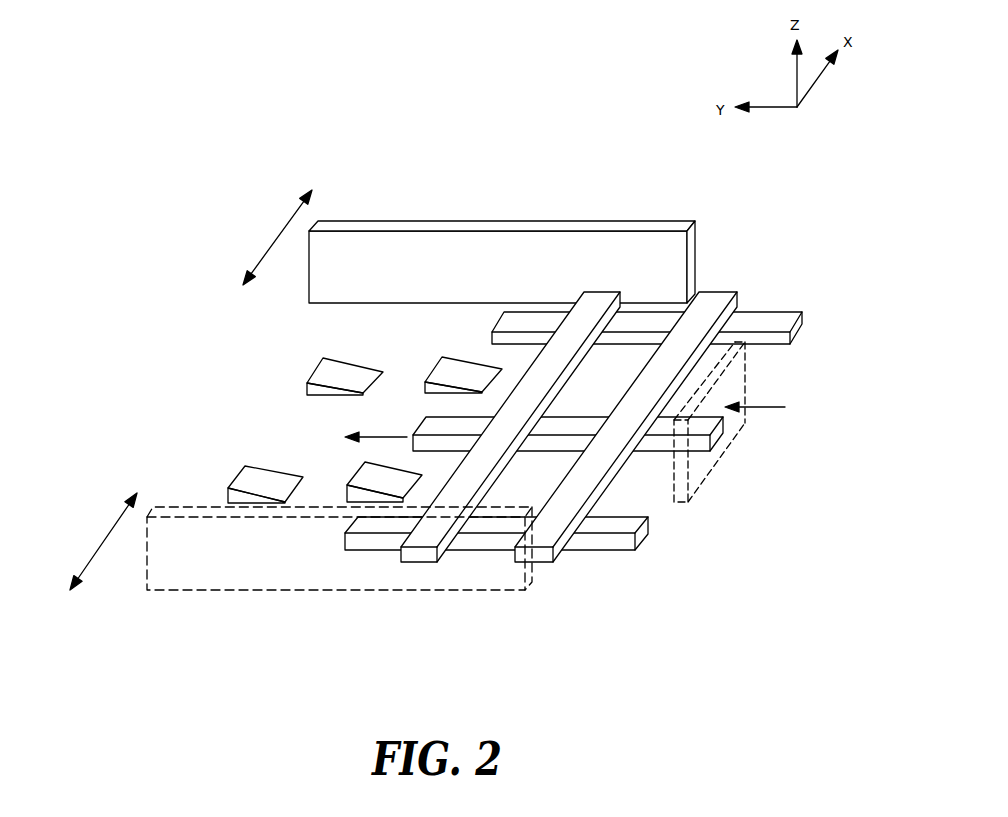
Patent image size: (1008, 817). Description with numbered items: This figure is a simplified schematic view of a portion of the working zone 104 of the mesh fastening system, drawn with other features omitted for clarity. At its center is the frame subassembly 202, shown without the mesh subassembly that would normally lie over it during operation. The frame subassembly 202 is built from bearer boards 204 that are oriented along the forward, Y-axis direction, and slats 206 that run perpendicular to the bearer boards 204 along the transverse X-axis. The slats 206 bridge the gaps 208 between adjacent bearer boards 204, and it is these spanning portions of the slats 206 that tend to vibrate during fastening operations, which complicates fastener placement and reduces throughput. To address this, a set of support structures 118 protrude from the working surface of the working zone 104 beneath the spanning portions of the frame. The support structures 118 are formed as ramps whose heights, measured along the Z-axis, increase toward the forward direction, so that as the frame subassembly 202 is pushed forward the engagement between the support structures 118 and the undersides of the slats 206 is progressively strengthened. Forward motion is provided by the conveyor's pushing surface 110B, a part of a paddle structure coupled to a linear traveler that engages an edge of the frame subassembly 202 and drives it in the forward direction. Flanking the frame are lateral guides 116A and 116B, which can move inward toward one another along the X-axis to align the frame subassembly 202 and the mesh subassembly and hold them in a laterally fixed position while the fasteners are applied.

The working zone 104 is at (134, 252).
The second pushing surface 110B is at (673, 465).
The lateral guide 116A is at (273, 590).
The lateral guide 116B is at (491, 221).
The support structures 118 is at (425, 392).
The frame subassembly 202 is at (593, 371).
The bearer boards 204 is at (617, 338).
The slats 206 is at (569, 371).
The gaps 208 is at (505, 357).